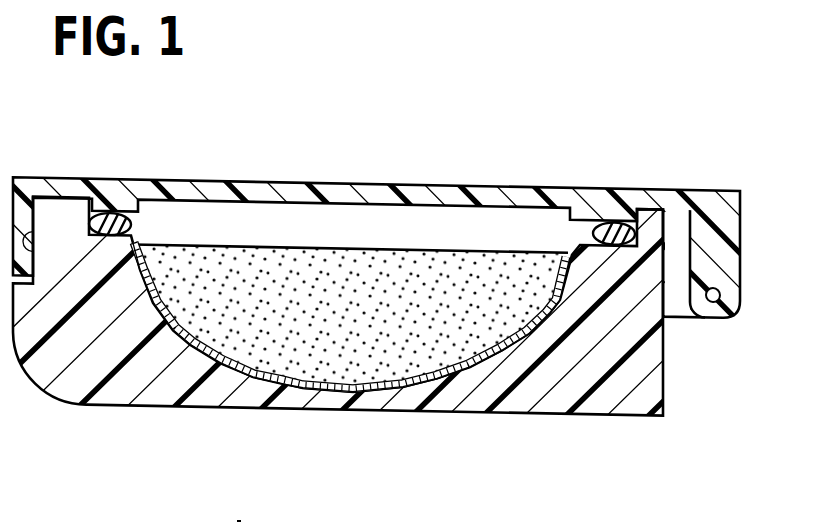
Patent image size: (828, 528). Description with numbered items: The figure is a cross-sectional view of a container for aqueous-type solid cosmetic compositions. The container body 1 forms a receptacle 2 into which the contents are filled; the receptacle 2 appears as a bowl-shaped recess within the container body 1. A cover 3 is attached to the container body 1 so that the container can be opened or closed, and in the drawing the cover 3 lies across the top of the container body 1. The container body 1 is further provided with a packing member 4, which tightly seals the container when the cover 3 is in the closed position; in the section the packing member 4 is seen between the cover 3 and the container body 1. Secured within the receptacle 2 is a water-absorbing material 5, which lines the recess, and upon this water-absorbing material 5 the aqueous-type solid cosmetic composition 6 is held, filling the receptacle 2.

The container body 1 is at (550, 393).
The receptacle 2 is at (187, 327).
The cover 3 is at (408, 183).
The packing member 4 is at (622, 210).
The water-absorbing material 5 is at (435, 369).
The aqueous-type solid cosmetic composition 6 is at (303, 250).